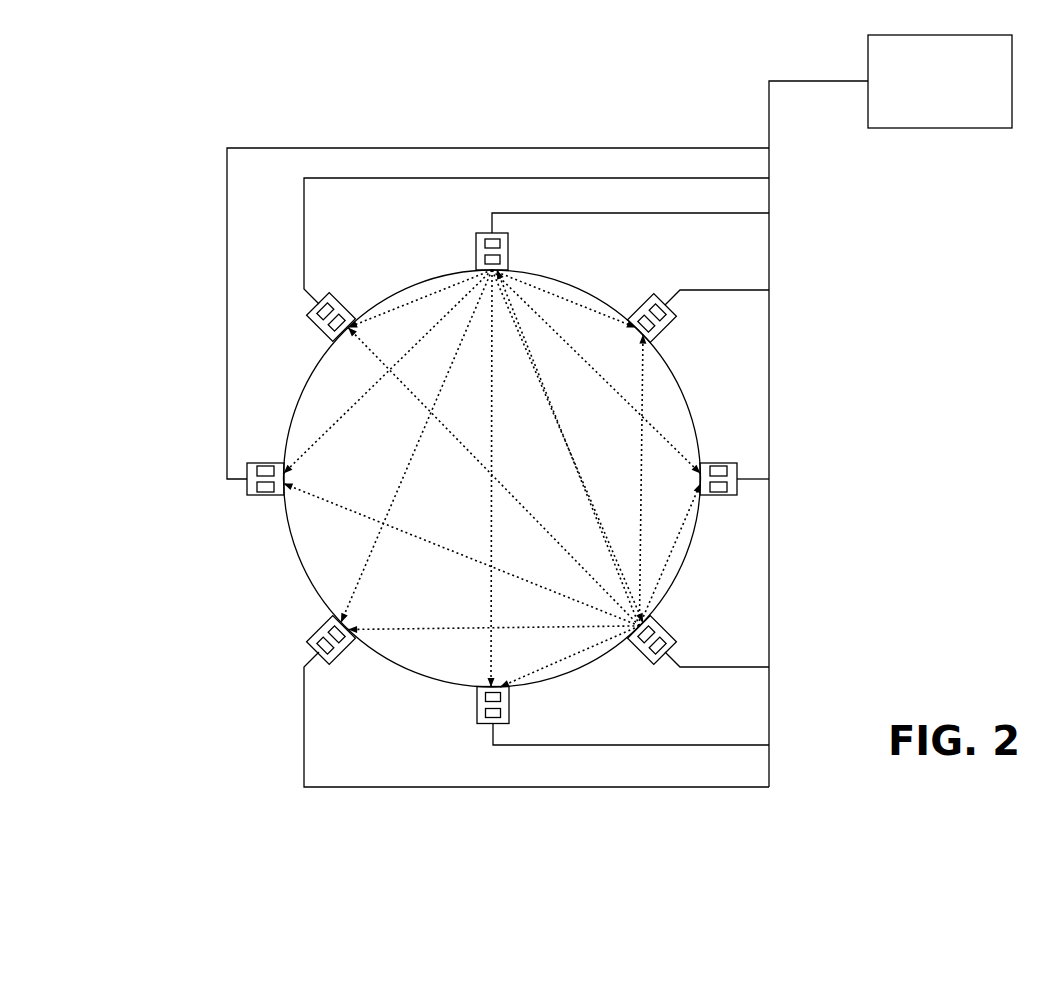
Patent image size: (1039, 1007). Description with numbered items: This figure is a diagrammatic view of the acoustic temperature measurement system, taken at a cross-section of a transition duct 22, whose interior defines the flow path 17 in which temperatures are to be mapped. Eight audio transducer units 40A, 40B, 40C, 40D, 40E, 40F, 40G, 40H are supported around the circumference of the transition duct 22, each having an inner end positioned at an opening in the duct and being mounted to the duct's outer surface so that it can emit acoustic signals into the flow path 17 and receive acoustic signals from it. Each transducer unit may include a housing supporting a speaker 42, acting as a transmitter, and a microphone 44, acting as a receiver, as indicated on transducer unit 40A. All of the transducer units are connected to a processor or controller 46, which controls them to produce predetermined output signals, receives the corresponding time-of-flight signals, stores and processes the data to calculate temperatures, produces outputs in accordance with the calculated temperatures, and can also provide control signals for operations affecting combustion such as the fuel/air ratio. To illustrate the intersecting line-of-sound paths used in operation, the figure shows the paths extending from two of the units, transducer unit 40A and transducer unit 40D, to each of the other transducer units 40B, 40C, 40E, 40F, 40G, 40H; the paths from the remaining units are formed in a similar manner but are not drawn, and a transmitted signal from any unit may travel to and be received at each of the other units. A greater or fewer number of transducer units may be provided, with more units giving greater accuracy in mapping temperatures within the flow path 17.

The flow path 17 is at (332, 545).
The transition duct 22 is at (287, 586).
The transducer unit 40A is at (577, 236).
The transducer unit 40B is at (666, 334).
The transducer unit 40C is at (728, 461).
The transducer unit 40D is at (664, 626).
The transducer unit 40E is at (475, 704).
The transducer unit 40F is at (312, 628).
The transducer unit 40G is at (261, 499).
The transducer unit 40H is at (314, 329).
The speaker 42 is at (483, 241).
The microphone 44 is at (483, 258).
The controller 46 is at (948, 85).